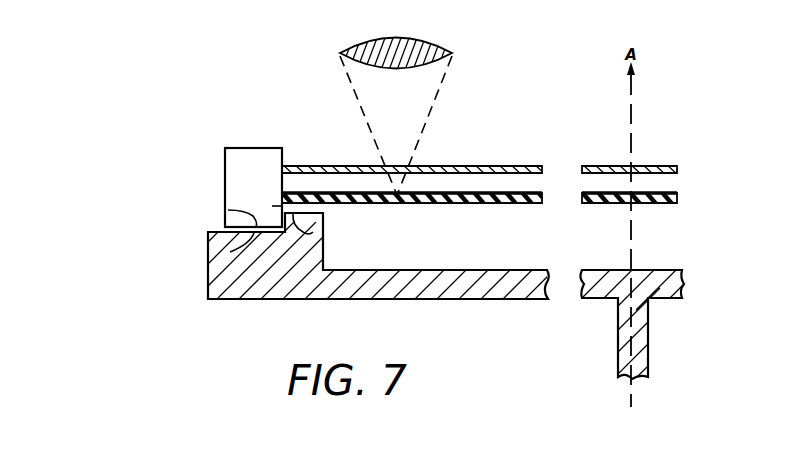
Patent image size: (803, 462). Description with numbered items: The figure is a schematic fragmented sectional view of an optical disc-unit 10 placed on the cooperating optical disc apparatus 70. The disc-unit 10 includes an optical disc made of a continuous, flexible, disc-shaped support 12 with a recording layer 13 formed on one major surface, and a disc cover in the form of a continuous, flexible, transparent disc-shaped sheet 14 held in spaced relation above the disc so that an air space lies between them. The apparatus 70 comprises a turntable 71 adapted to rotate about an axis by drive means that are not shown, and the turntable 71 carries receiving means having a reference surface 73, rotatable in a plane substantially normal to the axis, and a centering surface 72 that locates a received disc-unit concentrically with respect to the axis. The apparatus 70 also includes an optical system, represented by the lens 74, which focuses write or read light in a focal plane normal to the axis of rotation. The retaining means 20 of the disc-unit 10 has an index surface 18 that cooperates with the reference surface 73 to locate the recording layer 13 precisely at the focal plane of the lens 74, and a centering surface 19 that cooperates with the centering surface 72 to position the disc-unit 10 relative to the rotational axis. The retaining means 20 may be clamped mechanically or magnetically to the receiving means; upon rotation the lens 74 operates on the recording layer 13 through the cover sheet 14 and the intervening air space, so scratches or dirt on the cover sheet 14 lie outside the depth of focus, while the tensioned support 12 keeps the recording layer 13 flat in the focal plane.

The optical disc-unit 10 is at (311, 130).
The disc-shaped support 12 is at (527, 204).
The recording layer 13 is at (528, 193).
The disc cover sheet 14 is at (457, 166).
The index surface 18 is at (228, 210).
The centering surface 19 is at (272, 206).
The retaining means 20 is at (225, 161).
The optical disc apparatus 70 is at (157, 233).
The turntable 71 is at (464, 300).
The centering surface 72 is at (313, 232).
The reference surface 73 is at (230, 252).
The lens 74 is at (418, 40).